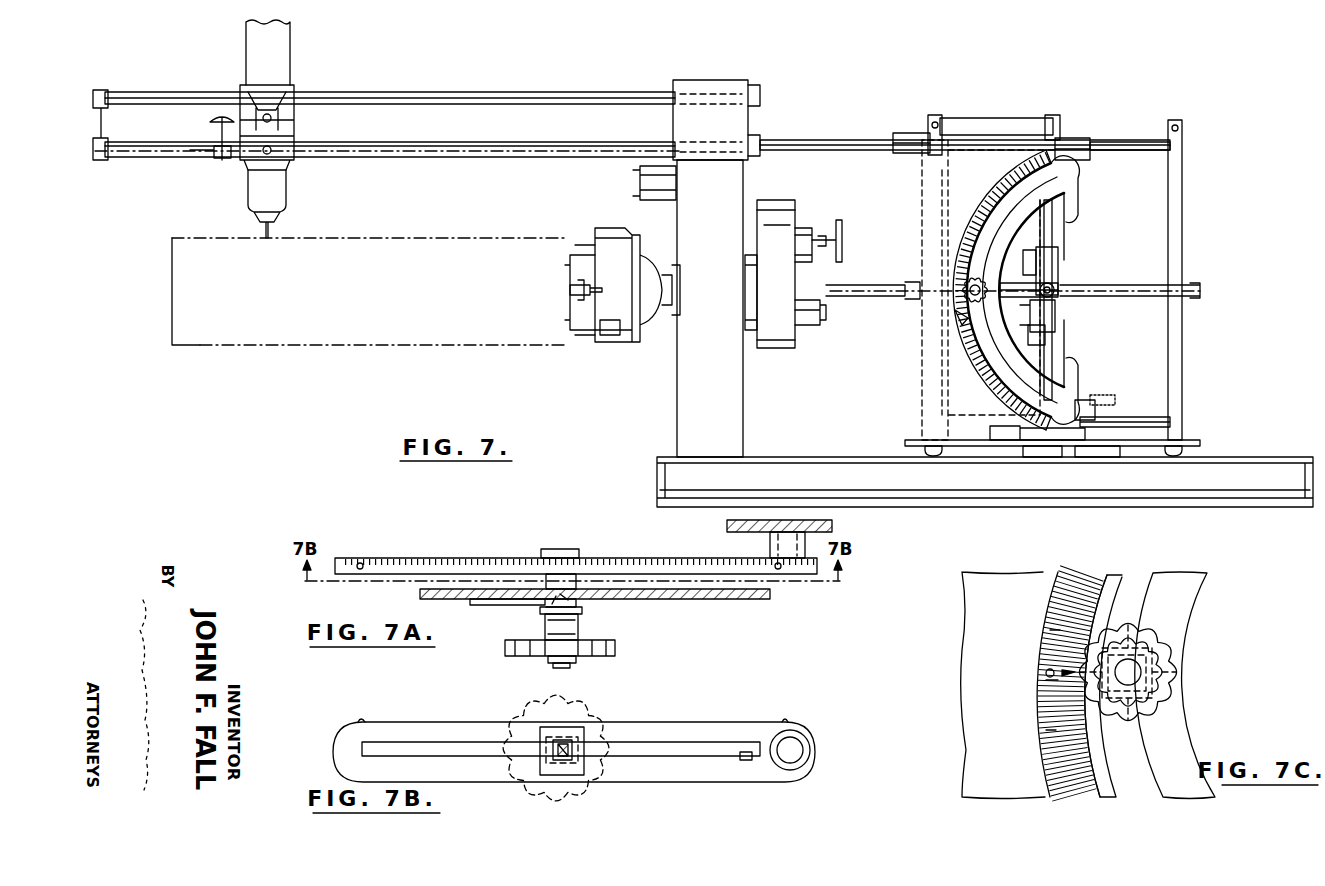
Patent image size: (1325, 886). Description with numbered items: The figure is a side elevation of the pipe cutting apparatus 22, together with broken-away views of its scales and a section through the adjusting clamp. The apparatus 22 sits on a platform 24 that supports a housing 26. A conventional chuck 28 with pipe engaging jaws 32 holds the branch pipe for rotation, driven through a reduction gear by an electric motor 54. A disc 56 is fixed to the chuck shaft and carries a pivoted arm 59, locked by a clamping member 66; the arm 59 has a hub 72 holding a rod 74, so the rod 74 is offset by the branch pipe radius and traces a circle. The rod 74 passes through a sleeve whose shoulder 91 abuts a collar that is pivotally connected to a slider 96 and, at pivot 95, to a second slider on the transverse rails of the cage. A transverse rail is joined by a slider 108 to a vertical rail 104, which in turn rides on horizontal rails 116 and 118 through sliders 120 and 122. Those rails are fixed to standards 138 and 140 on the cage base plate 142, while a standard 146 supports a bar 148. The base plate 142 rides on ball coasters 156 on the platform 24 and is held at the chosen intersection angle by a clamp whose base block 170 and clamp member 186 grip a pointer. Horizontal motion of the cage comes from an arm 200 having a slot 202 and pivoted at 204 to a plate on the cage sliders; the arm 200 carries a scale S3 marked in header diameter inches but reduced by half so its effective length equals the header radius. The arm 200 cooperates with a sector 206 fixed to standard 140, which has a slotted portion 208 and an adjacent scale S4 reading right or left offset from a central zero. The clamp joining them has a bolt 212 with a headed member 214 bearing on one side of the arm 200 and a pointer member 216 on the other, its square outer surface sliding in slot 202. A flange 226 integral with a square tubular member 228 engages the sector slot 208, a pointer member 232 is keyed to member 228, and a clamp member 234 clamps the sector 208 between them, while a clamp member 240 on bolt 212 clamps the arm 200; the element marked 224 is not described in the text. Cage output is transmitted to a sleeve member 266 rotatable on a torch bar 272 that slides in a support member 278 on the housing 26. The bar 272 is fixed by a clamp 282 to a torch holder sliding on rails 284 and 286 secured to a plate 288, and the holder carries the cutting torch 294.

In FIG. 7, the pipe cutting apparatus 22 is at (292, 352).
In FIG. 7, the platform 24 is at (1247, 457).
In FIG. 7, the housing 26 is at (742, 392).
In FIG. 7, the chuck 28 is at (613, 352).
In FIG. 7, the pipe engaging jaws 32 is at (560, 300).
In FIG. 7, the electric motor 54 is at (640, 193).
In FIG. 7, the disc 56 is at (778, 200).
In FIG. 7, the arm 59 is at (802, 228).
In FIG. 7, the clamping member 66 is at (840, 232).
In FIG. 7, the hub 72 is at (818, 308).
In FIG. 7, the rod 74 is at (858, 292).
In FIG. 7, the shoulder 91 is at (958, 324).
In FIG. 7, the pivotal connection 95 is at (1050, 340).
In FIG. 7, the slider 96 is at (1048, 240).
In FIG. 7, the vertical rail 104 is at (1052, 362).
In FIG. 7, the slider 108 is at (1060, 280).
In FIG. 7, the horizontal rail 116 is at (1138, 152).
In FIG. 7, the horizontal rail 118 is at (1135, 418).
In FIG. 7, the slider 120 is at (1073, 138).
In FIG. 7, the slider 122 is at (1082, 415).
In FIG. 7, the standard 138 is at (1183, 178).
In FIG. 7, the standard 140 is at (934, 115).
In FIG. 7, the cage base plate 142 is at (990, 447).
In FIG. 7, the standard 146 is at (1063, 118).
In FIG. 7, the bar 148 is at (1010, 118).
In FIG. 7, the ball coasters 156 is at (930, 456).
In FIG. 7, the base block 170 is at (1090, 457).
In FIG. 7, the clamp member 186 is at (1110, 398).
In FIG. 7, the arm 200 is at (1058, 260).
In FIG. 7A, the arm 200 is at (800, 566).
In FIG. 7B, the arm 200 is at (715, 734).
In FIG. 7, the slot 202 is at (1054, 310).
In FIG. 7B, the slot 202 is at (740, 760).
In FIG. 7, the pivot 204 is at (1060, 286).
In FIG. 7B, the pivot 204 is at (800, 748).
In FIG. 7, the sector 206 is at (1066, 176).
In FIG. 7A, the sector 206 is at (748, 600).
In FIG. 7C, the sector 206 is at (980, 685).
In FIG. 7, the slotted portion 208 is at (1025, 168).
In FIG. 7C, the slotted portion 208 is at (1148, 585).
In FIG. 7A, the bolt 212 is at (552, 663).
In FIG. 7B, the bolt 212 is at (556, 753).
In FIG. 7A, the headed member 214 is at (572, 549).
In FIG. 7A, the pointer member 216 is at (588, 576).
In FIG. 7B, the pointer member 216 is at (578, 738).
In FIG. 7C, the pointer member 216 is at (1172, 642).
In FIG. 7A, the nut 224 is at (582, 666).
In FIG. 7A, the flange 226 is at (556, 608).
In FIG. 7A, the tubular member 228 is at (590, 606).
In FIG. 7A, the pointer member 232 is at (590, 598).
In FIG. 7C, the pointer member 232 is at (1058, 678).
In FIG. 7A, the clamp member 234 is at (616, 648).
In FIG. 7B, the clamp member 234 is at (592, 788).
In FIG. 7C, the clamp member 234 is at (1178, 663).
In FIG. 7, the clamp member 240 is at (962, 304).
In FIG. 7C, the clamp member 240 is at (1162, 688).
In FIG. 7, the sleeve member 266 is at (906, 135).
In FIG. 7, the torch bar 272 is at (478, 157).
In FIG. 7, the support member 278 is at (730, 80).
In FIG. 7, the clamp 282 is at (222, 115).
In FIG. 7, the rail 284 is at (163, 95).
In FIG. 7, the rail 286 is at (168, 160).
In FIG. 7, the plate 288 is at (116, 160).
In FIG. 7, the cutting torch 294 is at (294, 198).
In FIG. 7, the scale S3 is at (1050, 230).
In FIG. 7A, the scale S3 is at (426, 558).
In FIG. 7B, the scale S3 is at (428, 722).
In FIG. 7, the scale S4 is at (1000, 170).
In FIG. 7A, the scale S4 is at (485, 602).
In FIG. 7C, the scale S4 is at (1048, 622).